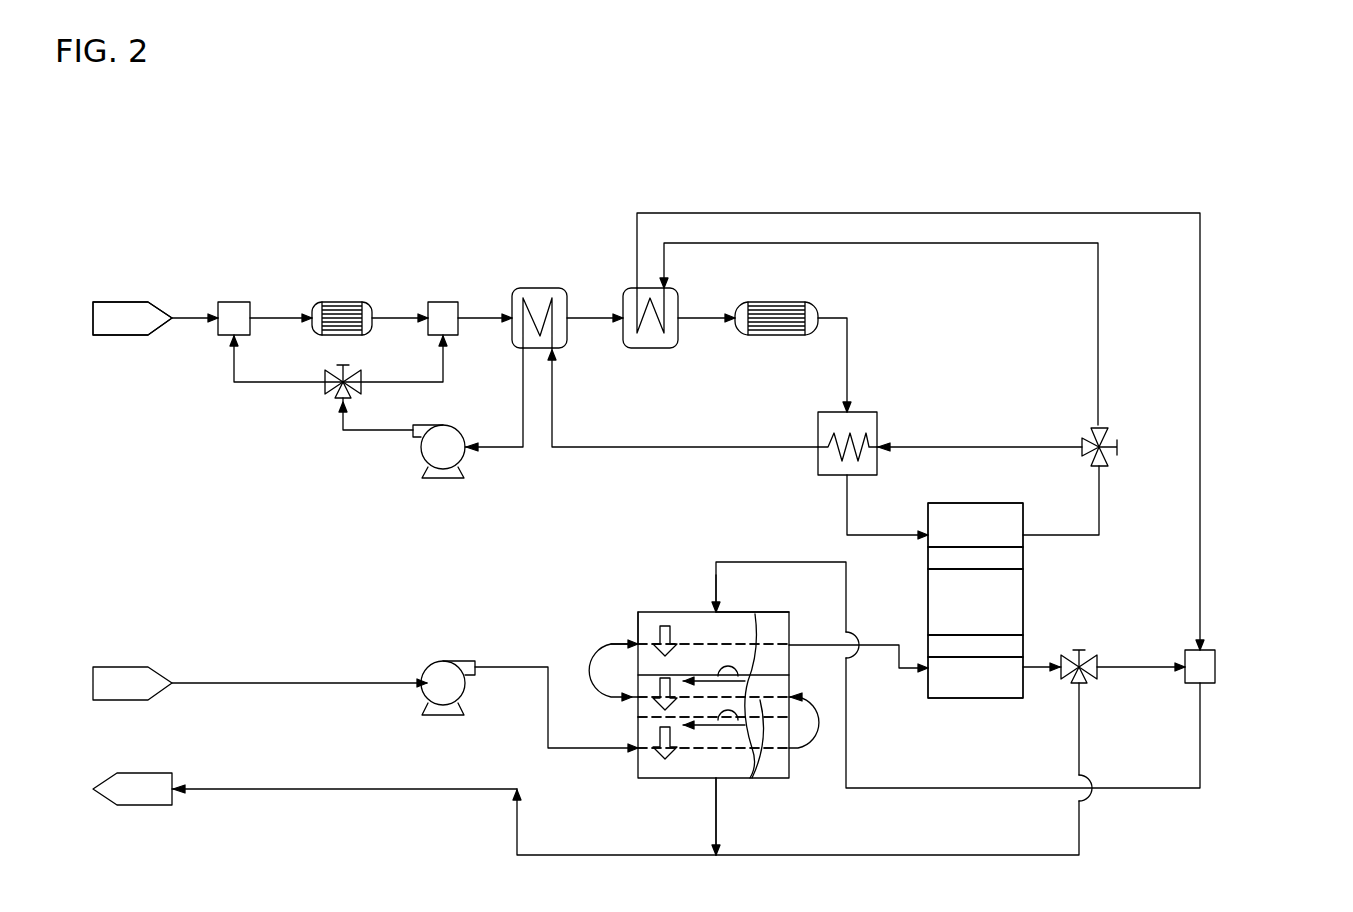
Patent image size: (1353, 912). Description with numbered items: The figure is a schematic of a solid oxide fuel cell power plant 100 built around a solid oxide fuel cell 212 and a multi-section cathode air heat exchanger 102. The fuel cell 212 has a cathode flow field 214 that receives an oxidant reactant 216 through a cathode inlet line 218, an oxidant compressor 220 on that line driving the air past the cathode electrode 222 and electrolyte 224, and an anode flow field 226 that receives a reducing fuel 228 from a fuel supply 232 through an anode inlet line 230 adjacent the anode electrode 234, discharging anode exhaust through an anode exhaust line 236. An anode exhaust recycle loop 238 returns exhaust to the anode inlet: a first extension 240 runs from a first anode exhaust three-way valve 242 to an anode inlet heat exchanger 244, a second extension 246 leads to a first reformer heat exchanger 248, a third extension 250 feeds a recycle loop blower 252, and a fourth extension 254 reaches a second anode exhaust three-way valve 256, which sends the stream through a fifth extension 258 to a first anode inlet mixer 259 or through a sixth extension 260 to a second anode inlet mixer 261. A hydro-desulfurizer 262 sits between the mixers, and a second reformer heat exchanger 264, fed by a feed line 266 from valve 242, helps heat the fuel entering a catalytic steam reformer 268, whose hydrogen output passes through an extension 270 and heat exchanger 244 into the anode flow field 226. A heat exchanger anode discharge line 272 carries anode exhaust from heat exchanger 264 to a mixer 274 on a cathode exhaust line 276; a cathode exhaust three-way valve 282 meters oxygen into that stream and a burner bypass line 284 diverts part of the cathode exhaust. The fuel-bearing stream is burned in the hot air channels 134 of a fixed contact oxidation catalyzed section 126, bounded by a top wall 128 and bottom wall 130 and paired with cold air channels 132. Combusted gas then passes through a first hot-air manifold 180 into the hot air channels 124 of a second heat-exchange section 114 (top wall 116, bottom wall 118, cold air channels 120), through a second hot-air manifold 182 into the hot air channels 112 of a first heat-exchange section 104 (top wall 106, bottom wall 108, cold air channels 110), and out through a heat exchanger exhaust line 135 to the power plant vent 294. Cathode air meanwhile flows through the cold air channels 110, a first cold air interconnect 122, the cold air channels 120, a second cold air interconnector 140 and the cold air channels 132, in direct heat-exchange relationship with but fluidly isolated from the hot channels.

The solid oxide fuel cell power plant 100 is at (1262, 170).
The multi-section cathode air heat exchanger 102 is at (670, 584).
The first heat-exchange section 104 is at (765, 788).
The top wall 106 is at (780, 765).
The bottom wall 108 is at (660, 772).
The cold air channels 110 is at (715, 745).
The hot air channels 112 is at (667, 773).
The second heat-exchange section 114 is at (625, 705).
The top wall 116 is at (793, 684).
The bottom wall 118 is at (643, 712).
The cold air channels 120 is at (645, 678).
The first cold air interconnect 122 is at (826, 745).
The hot air channels 124 is at (640, 672).
The fixed contact oxidation catalyzed section 126 is at (792, 600).
The top wall 128 is at (645, 630).
The bottom wall 130 is at (750, 663).
The cold air channels 132 is at (638, 640).
The hot air channels 134 is at (682, 630).
The heat exchanger exhaust line 135 is at (708, 835).
The second cold air interconnector 140 is at (617, 640).
The first hot-air manifold 180 is at (757, 745).
The second hot-air manifold 182 is at (745, 745).
The solid oxide fuel cell 212 is at (1082, 580).
The cathode flow field 214 is at (950, 688).
The oxidant reactant 216 is at (122, 665).
The cathode inlet line 218 is at (270, 682).
The oxidant compressor 220 is at (433, 666).
The cathode electrode 222 is at (1023, 645).
The electrolyte 224 is at (927, 597).
The anode flow field 226 is at (1010, 511).
The reducing fuel 228 is at (150, 292).
The anode inlet line 230 is at (188, 315).
The fuel supply 232 is at (132, 337).
The anode electrode 234 is at (927, 553).
The anode exhaust line 236 is at (1087, 545).
The anode exhaust recycle loop 238 is at (940, 352).
The first extension 240 is at (997, 443).
The first anode exhaust three-way valve 242 is at (1103, 427).
The anode inlet heat exchanger 244 is at (817, 463).
The second extension 246 is at (665, 447).
The first reformer heat exchanger 248 is at (537, 287).
The third extension 250 is at (522, 415).
The anode exhaust recycle loop blower 252 is at (415, 452).
The fourth extension 254 is at (340, 418).
The second anode exhaust three-way valve 256 is at (323, 387).
The fifth extension 258 is at (230, 367).
The first anode inlet mixer 259 is at (234, 300).
The sixth extension 260 is at (441, 360).
The second anode inlet mixer 261 is at (440, 300).
The hydro-desulfurizer 262 is at (327, 302).
The second reformer heat exchanger 264 is at (650, 350).
The second reformer heat exchanger feed line 266 is at (958, 243).
The catalytic steam reformer 268 is at (765, 337).
The extension of the anode inlet 270 is at (849, 372).
The heat exchanger anode discharge line 272 is at (985, 213).
The mixer 274 is at (1212, 650).
The cathode exhaust line 276 is at (1158, 665).
The cathode exhaust three-way valve 282 is at (1085, 688).
The burner bypass line 284 is at (1078, 730).
The power plant vent 294 is at (155, 770).